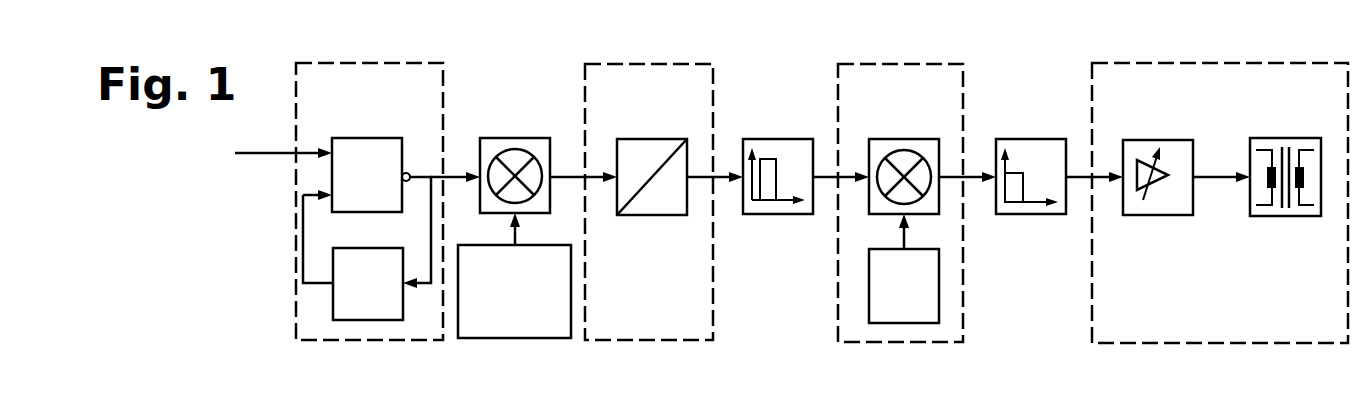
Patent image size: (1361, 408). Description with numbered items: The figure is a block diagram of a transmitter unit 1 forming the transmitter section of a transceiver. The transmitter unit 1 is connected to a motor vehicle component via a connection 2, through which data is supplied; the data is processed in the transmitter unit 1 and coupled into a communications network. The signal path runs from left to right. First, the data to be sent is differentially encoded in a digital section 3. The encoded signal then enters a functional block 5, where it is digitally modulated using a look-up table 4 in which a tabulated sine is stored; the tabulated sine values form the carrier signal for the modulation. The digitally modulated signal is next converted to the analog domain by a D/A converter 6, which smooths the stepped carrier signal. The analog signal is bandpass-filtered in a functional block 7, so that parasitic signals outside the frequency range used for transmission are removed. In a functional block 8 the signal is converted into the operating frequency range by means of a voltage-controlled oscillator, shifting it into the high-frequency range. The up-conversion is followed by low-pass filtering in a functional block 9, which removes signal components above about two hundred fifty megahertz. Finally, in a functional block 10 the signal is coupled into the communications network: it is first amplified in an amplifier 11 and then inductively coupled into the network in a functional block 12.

The transmitter unit 1 is at (544, 48).
The connection 2 is at (265, 155).
The digital section 3 is at (370, 340).
The look-up table 4 is at (518, 338).
The functional block 5 is at (515, 138).
The D/A converter 6 is at (655, 340).
The functional block 7 is at (778, 214).
The functional block 8 is at (905, 342).
The functional block 9 is at (1031, 214).
The functional block 10 is at (1220, 235).
The amplifier 11 is at (1158, 215).
The functional block 12 is at (1285, 216).